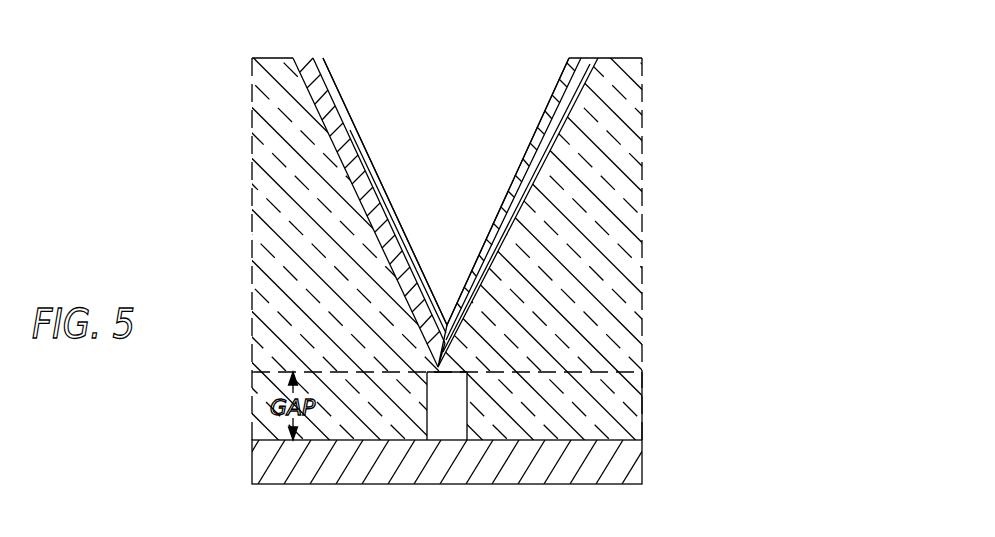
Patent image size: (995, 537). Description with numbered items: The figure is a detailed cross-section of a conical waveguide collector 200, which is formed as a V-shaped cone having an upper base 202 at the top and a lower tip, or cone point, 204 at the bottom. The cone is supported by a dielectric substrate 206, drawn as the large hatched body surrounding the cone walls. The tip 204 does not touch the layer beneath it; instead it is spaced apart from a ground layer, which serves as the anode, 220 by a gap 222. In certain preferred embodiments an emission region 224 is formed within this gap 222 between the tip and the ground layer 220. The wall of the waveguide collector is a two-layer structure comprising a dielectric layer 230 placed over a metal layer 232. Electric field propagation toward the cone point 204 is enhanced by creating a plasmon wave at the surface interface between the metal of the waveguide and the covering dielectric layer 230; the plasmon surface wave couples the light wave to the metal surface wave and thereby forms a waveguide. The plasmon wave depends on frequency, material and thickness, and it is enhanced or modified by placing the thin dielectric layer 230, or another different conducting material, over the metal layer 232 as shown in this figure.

The conical waveguide collector 200 is at (656, 285).
The upper base 202 is at (446, 58).
The lower tip (cone point) 204 is at (443, 370).
The dielectric substrate 206 is at (641, 208).
The ground layer (anode) 220 is at (632, 468).
The gap 222 is at (643, 424).
The emission region 224 is at (447, 420).
The dielectric layer 230 is at (375, 166).
The metal layer 232 is at (590, 58).